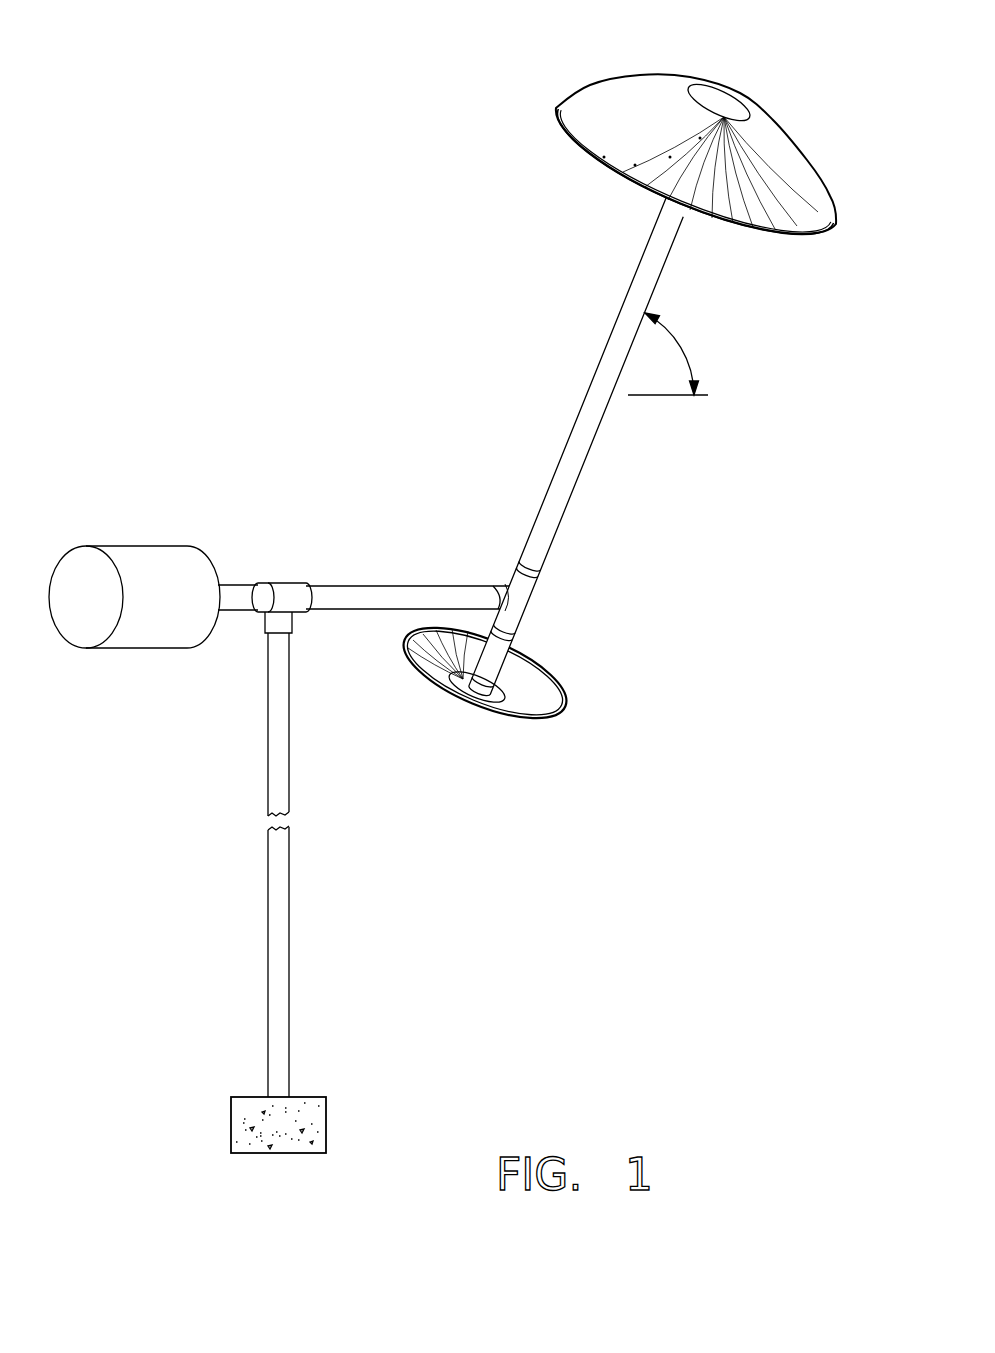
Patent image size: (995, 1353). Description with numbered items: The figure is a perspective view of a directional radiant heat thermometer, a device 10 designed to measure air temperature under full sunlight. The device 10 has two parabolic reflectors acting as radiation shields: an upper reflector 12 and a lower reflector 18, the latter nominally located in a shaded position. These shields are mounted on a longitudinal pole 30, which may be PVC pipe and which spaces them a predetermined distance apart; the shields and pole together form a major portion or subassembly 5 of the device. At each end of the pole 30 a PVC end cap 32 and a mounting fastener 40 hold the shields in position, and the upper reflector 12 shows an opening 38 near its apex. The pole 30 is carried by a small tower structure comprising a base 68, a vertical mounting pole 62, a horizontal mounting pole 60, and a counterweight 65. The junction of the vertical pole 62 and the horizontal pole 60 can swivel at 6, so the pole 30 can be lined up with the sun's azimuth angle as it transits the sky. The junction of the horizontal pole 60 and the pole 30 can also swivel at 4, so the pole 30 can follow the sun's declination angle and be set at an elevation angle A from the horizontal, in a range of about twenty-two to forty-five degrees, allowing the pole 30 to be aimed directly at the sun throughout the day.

The device 10 is at (230, 277).
The upper reflector 12 is at (538, 113).
The central opening 38 is at (737, 116).
The mounting fastener 40 is at (718, 101).
The longitudinal pole 30 is at (623, 333).
The major portion 5 is at (560, 427).
The elevation angle A is at (685, 346).
The swivel junction 4 is at (515, 598).
The PVC end cap 32 is at (497, 690).
The lower reflector 18 is at (510, 728).
The horizontal mounting pole 60 is at (333, 593).
The swivel junction 6 is at (283, 617).
The counterweight 65 is at (160, 552).
The vertical mounting pole 62 is at (277, 722).
The base 68 is at (245, 1102).